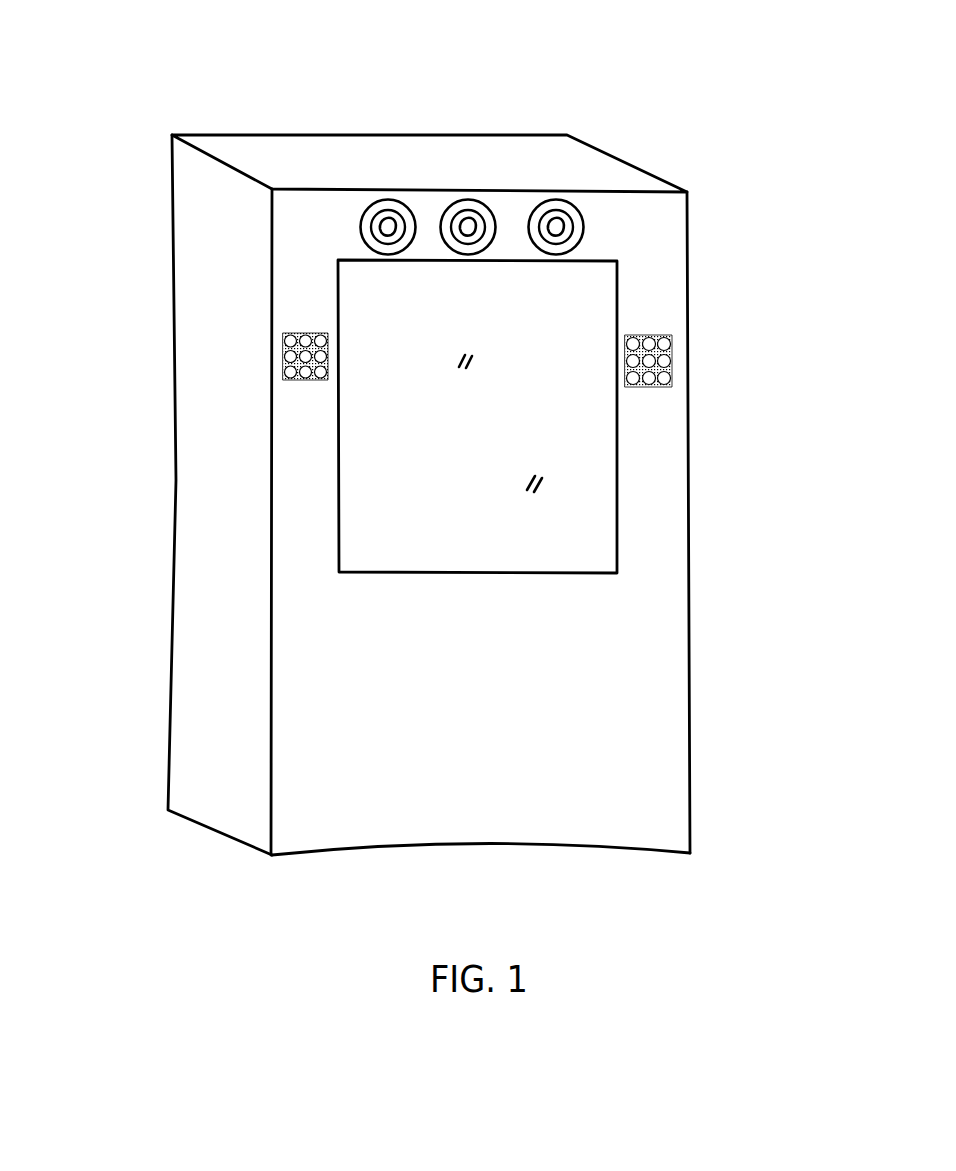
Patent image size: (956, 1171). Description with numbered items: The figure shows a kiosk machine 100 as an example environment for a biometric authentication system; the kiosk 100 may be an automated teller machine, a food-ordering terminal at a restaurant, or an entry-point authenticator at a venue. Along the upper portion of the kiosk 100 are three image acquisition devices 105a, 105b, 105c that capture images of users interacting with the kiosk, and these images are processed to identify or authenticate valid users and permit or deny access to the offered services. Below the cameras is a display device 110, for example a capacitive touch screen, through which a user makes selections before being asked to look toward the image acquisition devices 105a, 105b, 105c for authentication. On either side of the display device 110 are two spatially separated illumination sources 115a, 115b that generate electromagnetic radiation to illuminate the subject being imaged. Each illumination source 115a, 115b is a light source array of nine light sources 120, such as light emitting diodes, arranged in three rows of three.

The kiosk machine 100 is at (186, 68).
The image acquisition device 105a is at (385, 207).
The image acquisition device 105b is at (467, 207).
The image acquisition device 105c is at (560, 207).
The display device 110 is at (598, 327).
The illumination source 115a is at (283, 351).
The illumination source 115b is at (728, 312).
The light source 120 is at (648, 348).